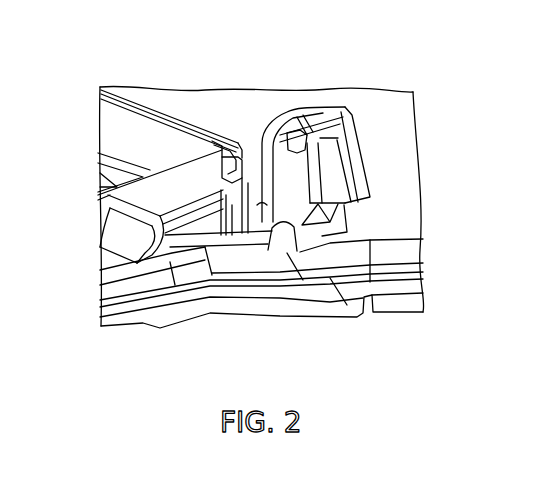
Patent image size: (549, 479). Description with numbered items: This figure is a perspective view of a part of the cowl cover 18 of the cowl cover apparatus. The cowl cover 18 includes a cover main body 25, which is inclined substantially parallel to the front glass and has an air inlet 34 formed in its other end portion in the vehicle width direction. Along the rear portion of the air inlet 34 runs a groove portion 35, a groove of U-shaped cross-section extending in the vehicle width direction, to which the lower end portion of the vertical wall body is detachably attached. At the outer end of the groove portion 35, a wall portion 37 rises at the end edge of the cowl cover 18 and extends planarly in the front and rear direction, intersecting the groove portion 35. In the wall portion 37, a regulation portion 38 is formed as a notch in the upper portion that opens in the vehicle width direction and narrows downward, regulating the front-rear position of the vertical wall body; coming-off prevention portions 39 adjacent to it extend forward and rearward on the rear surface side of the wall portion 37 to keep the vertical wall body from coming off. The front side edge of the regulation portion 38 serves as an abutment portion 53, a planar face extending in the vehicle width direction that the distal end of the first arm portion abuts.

The cowl cover 18 is at (392, 84).
The cover main body 25 is at (152, 97).
The air inlet 34 is at (102, 188).
The groove portion 35 is at (116, 149).
The wall portion 37 is at (362, 139).
The regulation portion 38 is at (253, 157).
The coming-off prevention portions 39 is at (222, 141).
The abutment portion 53 is at (237, 153).